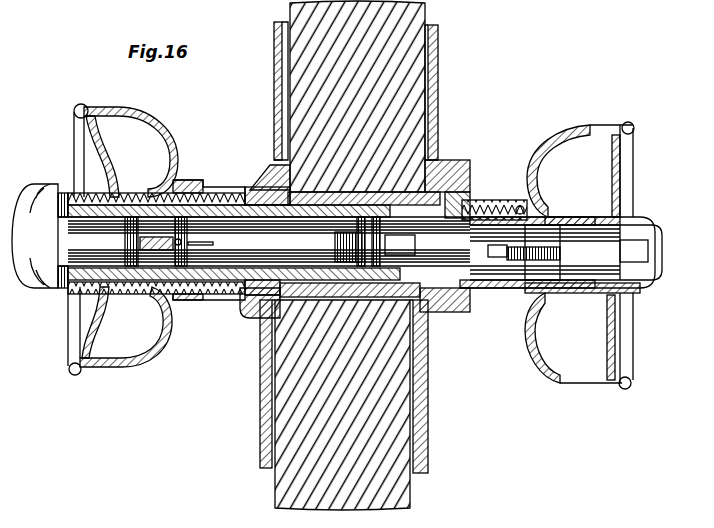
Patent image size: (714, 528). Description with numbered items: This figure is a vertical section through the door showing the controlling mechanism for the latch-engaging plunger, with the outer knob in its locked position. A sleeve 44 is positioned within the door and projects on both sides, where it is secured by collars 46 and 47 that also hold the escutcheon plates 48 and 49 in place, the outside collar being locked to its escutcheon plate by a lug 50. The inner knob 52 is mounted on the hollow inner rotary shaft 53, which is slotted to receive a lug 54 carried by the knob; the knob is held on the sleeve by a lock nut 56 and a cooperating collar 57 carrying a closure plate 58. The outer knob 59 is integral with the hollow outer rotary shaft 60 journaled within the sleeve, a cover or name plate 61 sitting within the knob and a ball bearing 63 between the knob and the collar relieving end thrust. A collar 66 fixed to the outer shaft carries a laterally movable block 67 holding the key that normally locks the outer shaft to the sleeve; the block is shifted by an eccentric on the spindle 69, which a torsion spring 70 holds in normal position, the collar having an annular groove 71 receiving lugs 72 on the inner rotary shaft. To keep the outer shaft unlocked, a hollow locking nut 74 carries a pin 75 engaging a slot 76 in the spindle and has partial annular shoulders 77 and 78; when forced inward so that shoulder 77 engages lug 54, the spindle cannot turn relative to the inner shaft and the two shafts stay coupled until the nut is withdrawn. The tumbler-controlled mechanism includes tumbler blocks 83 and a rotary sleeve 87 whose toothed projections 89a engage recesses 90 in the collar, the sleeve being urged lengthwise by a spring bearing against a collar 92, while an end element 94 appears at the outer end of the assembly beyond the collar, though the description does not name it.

The sleeve 44 is at (446, 152).
The collar 46 is at (448, 312).
The collar 47 is at (262, 176).
The escutcheon plate 48 is at (438, 88).
The escutcheon plate 49 is at (277, 78).
The lug 50 is at (442, 174).
The inner knob 52 is at (146, 132).
The inner rotary shaft 53 is at (223, 300).
The lug 54 is at (122, 284).
The lock nut 56 is at (197, 193).
The collar 57 is at (122, 200).
The closure plate 58 is at (102, 155).
The outer knob 59 is at (566, 382).
The outer rotary shaft 60 is at (466, 216).
The cover or name plate 61 is at (620, 188).
The ball bearing 63 is at (536, 306).
The collar 66 is at (405, 296).
The block 67 is at (375, 241).
The spindle 69 is at (240, 291).
The torsion spring 70 is at (335, 284).
The annular groove 71 is at (365, 290).
The lugs 72 is at (374, 206).
The locking nut 74 is at (40, 236).
The pin 75 is at (175, 239).
The slot 76 is at (208, 270).
The annular shoulder 77 is at (108, 284).
The annular shoulder 78 is at (152, 284).
The block 83 is at (510, 247).
The rotary sleeve 87 is at (506, 250).
The toothed projections 89a is at (490, 256).
The recesses 90 is at (455, 200).
The collar 92 is at (351, 248).
The cap 94 is at (662, 248).